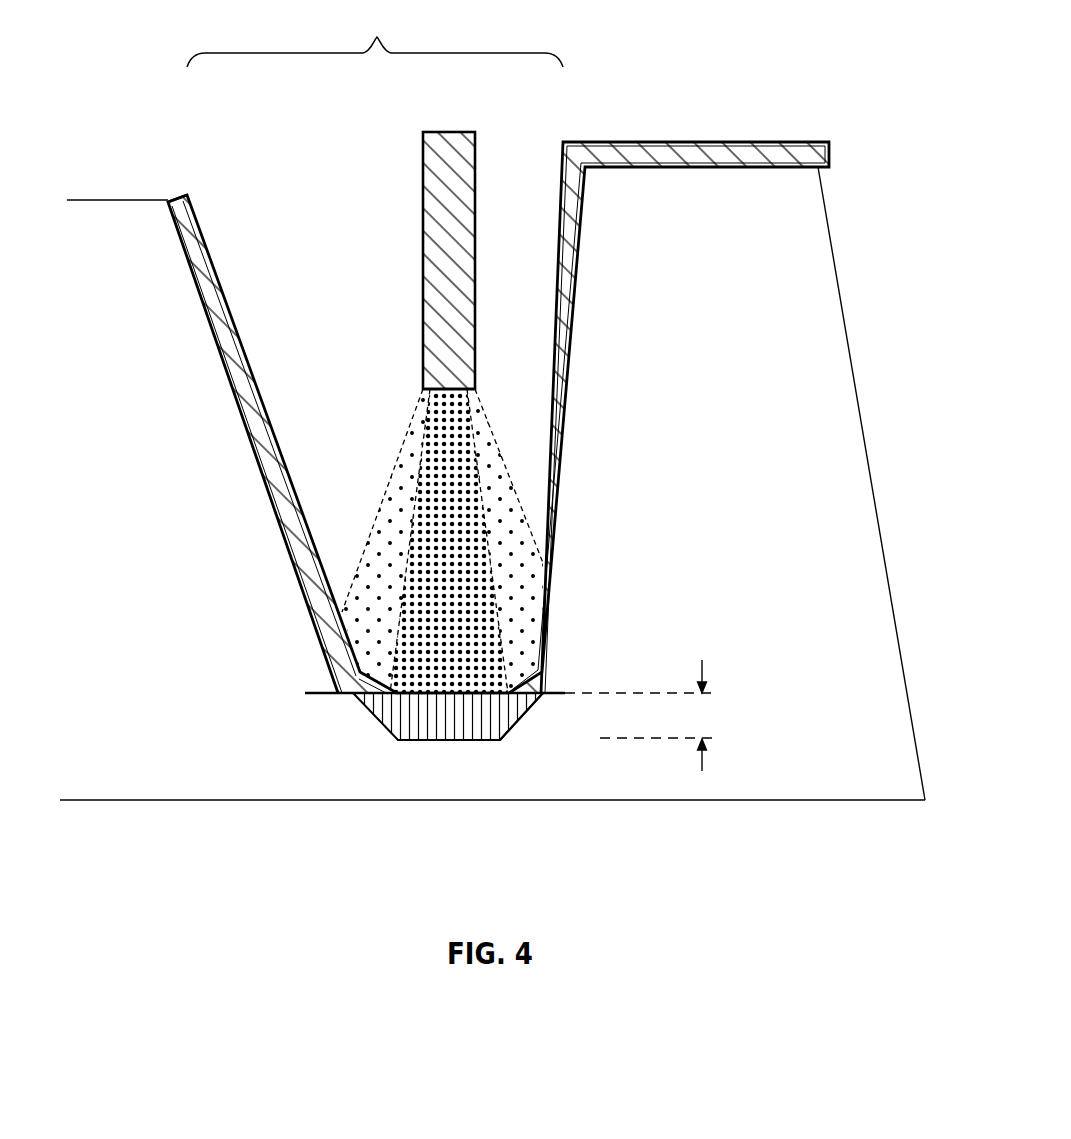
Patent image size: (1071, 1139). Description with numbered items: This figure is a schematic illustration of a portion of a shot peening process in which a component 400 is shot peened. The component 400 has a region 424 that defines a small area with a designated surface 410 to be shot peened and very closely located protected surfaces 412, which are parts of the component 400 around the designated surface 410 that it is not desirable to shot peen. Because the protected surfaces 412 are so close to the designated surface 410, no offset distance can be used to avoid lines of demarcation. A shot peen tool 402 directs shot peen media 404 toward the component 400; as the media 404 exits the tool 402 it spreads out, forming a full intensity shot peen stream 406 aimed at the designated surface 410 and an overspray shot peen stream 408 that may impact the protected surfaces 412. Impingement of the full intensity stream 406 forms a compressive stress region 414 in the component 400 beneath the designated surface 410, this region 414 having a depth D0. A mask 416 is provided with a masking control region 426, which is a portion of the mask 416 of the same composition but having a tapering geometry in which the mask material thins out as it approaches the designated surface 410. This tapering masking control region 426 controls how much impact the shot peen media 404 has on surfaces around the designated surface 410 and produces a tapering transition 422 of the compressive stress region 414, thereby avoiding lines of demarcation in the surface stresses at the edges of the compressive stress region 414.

The component 400 is at (99, 226).
The shot peen tool 402 is at (424, 178).
The shot peen media 404 is at (481, 384).
The full intensity shot peen stream 406 is at (435, 401).
The overspray shot peen stream 408 is at (391, 497).
The designated surface 410 is at (442, 683).
The protected surfaces 412 is at (234, 423).
The compressive stress region 414 is at (474, 741).
The mask 416 is at (203, 236).
The tapering transition 422 is at (520, 737).
The region 424 is at (375, 37).
The masking control region 426 is at (375, 662).
The depth D0 is at (702, 660).